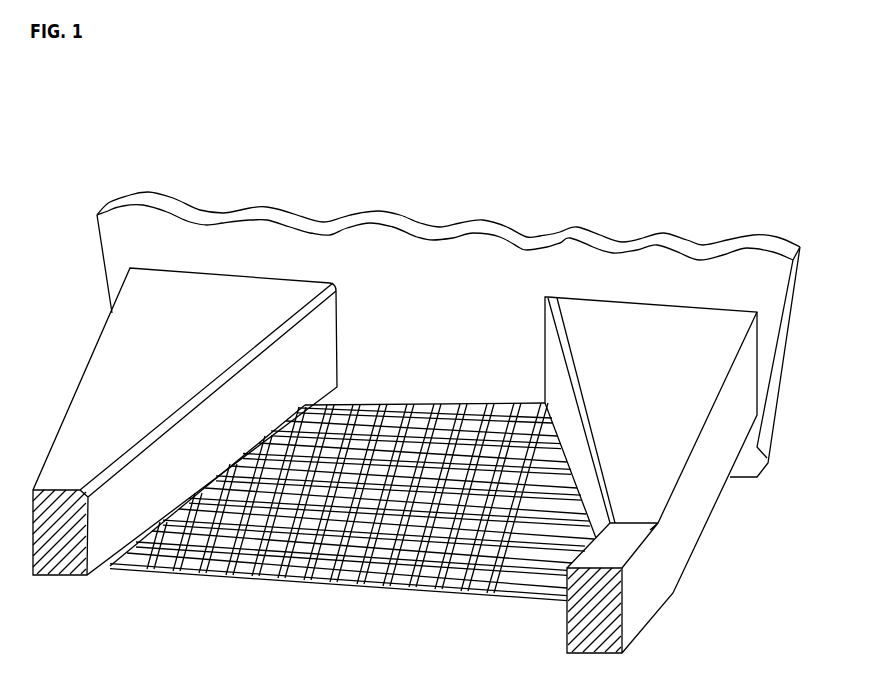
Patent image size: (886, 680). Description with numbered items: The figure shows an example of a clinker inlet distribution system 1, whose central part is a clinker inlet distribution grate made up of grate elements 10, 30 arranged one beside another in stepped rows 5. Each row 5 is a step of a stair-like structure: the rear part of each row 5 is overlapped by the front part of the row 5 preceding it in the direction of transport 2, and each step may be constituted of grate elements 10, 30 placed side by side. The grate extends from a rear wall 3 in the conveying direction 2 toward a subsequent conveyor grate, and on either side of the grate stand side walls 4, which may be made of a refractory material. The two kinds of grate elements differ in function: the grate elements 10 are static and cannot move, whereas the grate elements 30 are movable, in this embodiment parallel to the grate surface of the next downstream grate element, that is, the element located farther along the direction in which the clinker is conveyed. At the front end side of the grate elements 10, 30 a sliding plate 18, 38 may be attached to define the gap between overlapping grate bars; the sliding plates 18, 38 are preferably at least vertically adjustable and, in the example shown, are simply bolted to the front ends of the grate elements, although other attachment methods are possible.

The clinker inlet distribution system 1 is at (96, 157).
The direction of transport 2 is at (263, 469).
The rear wall 3 is at (440, 305).
The side walls 4 is at (232, 420).
The row 5 is at (400, 388).
The grate element 10 is at (200, 582).
The sliding plate 18 is at (156, 577).
The grate element 30 is at (345, 537).
The sliding plate 38 is at (370, 507).